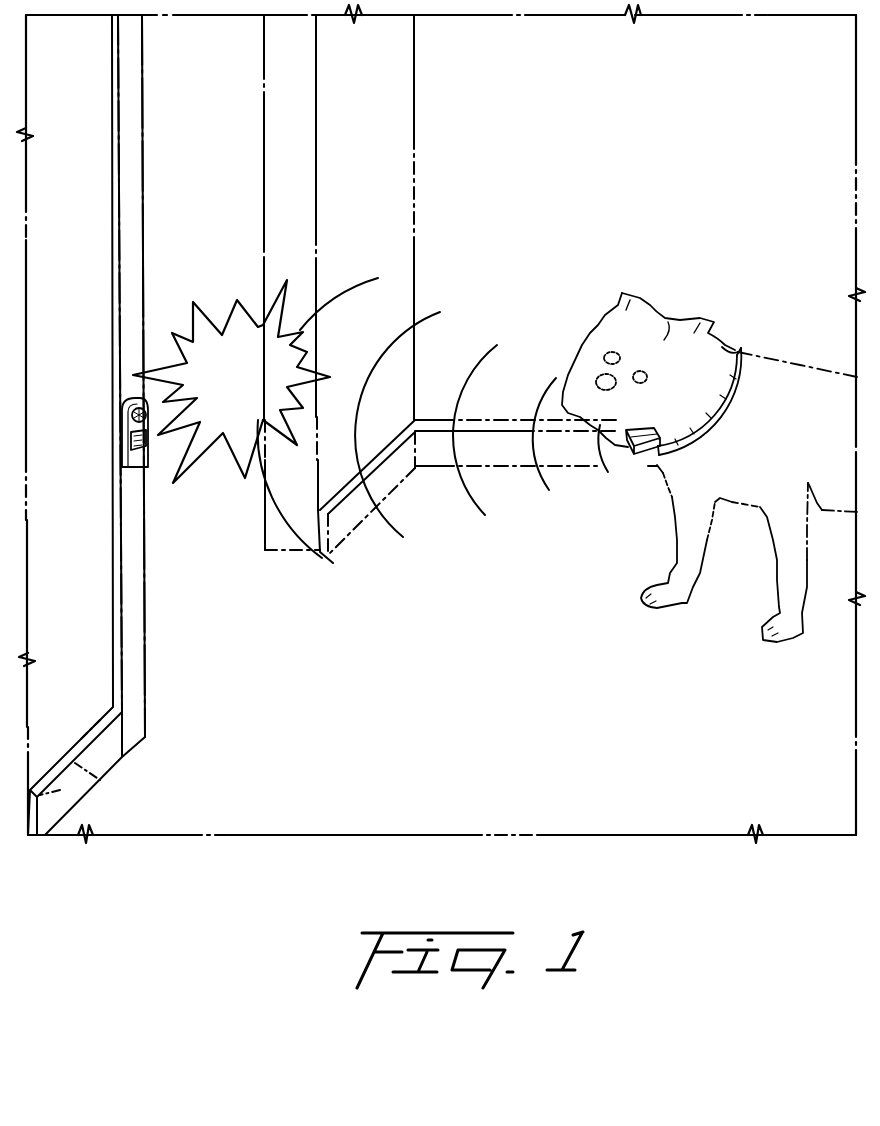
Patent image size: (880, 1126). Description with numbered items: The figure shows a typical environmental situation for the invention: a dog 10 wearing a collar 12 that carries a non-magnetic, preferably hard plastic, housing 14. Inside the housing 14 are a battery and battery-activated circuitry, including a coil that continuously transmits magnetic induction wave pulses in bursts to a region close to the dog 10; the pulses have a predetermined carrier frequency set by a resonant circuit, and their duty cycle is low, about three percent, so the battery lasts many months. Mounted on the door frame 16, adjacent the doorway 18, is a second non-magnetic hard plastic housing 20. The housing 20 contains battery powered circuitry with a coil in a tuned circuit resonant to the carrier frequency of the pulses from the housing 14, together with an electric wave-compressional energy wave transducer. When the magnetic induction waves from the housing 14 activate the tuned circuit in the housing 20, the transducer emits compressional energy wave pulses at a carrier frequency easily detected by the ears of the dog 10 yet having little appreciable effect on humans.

The dog 10 is at (821, 365).
The collar 12 is at (733, 352).
The housing 14 is at (638, 452).
The door frame 16 is at (128, 310).
The doorway 18 is at (214, 274).
The housing 20 is at (128, 459).